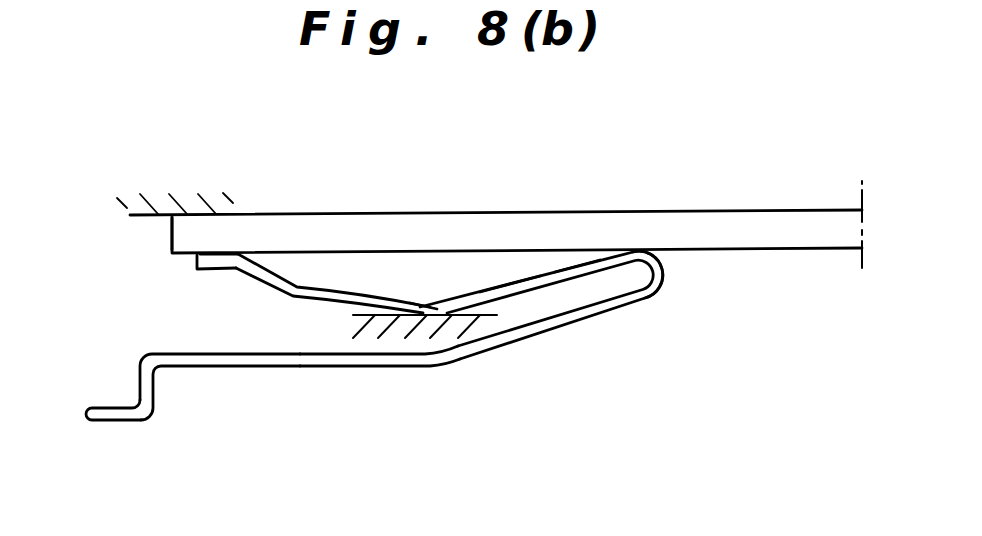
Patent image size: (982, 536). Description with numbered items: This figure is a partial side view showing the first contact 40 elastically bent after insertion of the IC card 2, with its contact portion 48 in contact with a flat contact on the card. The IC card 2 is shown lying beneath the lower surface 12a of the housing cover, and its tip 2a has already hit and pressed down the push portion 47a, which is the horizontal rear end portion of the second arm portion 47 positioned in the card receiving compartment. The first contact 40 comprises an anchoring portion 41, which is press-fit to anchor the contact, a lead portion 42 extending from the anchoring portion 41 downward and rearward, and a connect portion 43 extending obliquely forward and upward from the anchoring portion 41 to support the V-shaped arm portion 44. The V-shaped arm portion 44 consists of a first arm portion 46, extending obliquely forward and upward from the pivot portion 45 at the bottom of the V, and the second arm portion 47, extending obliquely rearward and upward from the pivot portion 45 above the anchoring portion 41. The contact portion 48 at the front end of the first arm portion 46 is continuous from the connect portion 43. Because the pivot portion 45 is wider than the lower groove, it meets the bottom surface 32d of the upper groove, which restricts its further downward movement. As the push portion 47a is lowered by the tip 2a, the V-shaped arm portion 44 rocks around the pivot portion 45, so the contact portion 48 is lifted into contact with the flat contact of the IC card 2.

The IC card 2 is at (768, 257).
The tip of the IC card 2a is at (171, 236).
The lower surface of the housing cover 12a is at (147, 217).
The bottom surface of the upper groove 32d is at (366, 318).
The first contact 40 is at (225, 376).
The anchoring portion 41 is at (305, 368).
The lead portion 42 is at (103, 423).
The connect portion 43 is at (570, 322).
The V-shaped arm portion 44 is at (508, 275).
The pivot portion 45 is at (437, 305).
The first arm portion 46 is at (575, 265).
The second arm portion 47 is at (276, 273).
The push portion 47a is at (200, 270).
The contact portion 48 is at (633, 250).